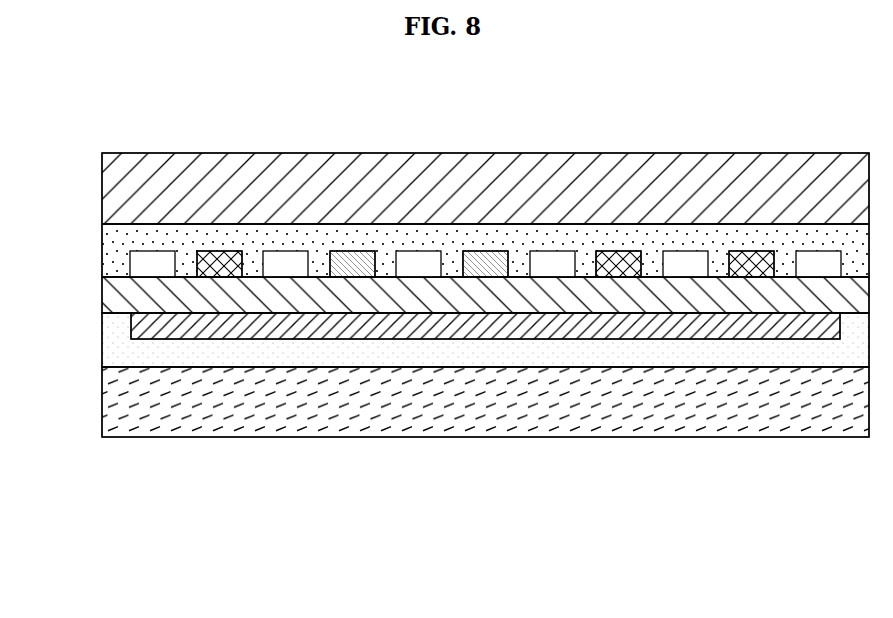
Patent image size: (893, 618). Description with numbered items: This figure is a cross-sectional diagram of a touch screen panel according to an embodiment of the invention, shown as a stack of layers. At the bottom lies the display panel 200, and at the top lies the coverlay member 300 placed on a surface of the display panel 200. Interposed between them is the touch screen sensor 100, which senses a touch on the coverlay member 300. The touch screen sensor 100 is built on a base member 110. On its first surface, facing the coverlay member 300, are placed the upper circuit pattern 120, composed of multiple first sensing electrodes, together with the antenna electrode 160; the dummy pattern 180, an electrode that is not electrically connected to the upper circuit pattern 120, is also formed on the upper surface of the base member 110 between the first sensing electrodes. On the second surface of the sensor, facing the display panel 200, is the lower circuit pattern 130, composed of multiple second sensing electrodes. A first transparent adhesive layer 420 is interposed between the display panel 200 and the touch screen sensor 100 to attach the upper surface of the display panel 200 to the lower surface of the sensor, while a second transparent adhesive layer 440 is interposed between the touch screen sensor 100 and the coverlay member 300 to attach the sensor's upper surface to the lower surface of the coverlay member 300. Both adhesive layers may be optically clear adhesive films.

The touch screen sensor 100 is at (485, 423).
The base member 110 is at (759, 328).
The upper circuit pattern 120 is at (817, 267).
The lower circuit pattern 130 is at (676, 328).
The antenna electrode 160 is at (487, 263).
The dummy pattern 180 is at (485, 395).
The display panel 200 is at (102, 412).
The coverlay member 300 is at (102, 181).
The first transparent adhesive layer 420 is at (102, 342).
The second transparent adhesive layer 440 is at (102, 252).